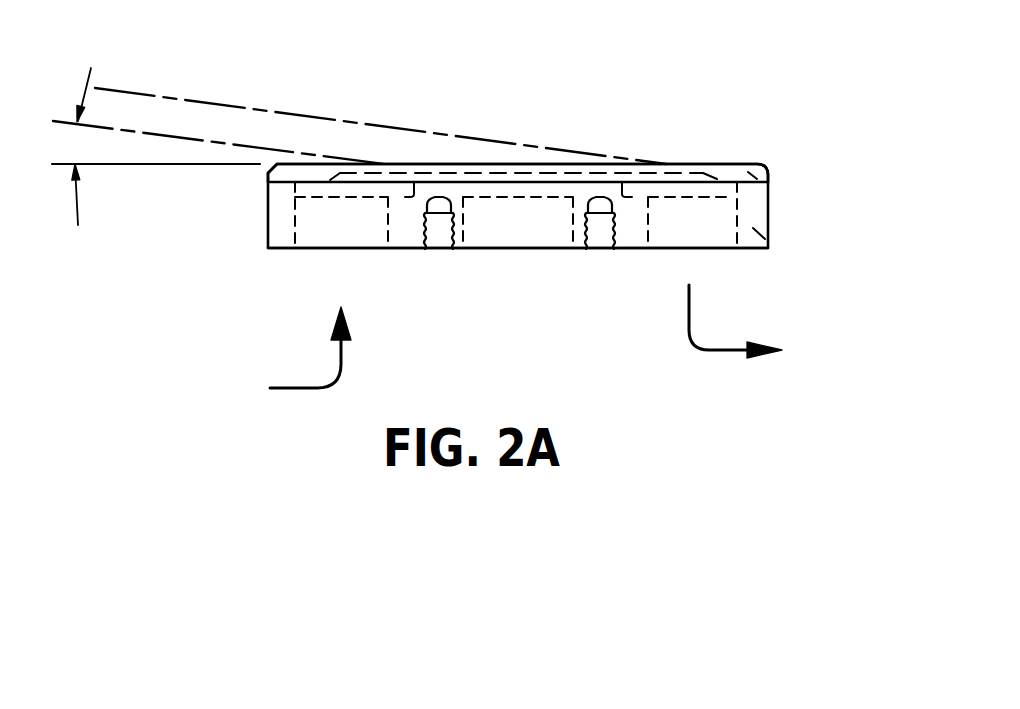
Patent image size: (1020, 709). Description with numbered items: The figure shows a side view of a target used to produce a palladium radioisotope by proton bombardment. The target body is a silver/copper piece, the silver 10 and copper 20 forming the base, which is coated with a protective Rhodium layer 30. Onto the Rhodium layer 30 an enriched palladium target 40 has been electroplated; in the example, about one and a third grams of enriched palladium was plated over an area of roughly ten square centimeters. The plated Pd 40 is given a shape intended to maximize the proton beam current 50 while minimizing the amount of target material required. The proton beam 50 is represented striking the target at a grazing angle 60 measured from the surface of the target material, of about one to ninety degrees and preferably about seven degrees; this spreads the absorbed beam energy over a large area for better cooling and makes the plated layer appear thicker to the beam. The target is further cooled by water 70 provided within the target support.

The silver layer 10 is at (768, 197).
The copper layer 20 is at (768, 248).
The protective Rhodium layer 30 is at (747, 160).
The Pd target 40 is at (672, 160).
The proton beam current 50 is at (252, 105).
The grazing angle 60 is at (123, 150).
The water 70 is at (529, 347).